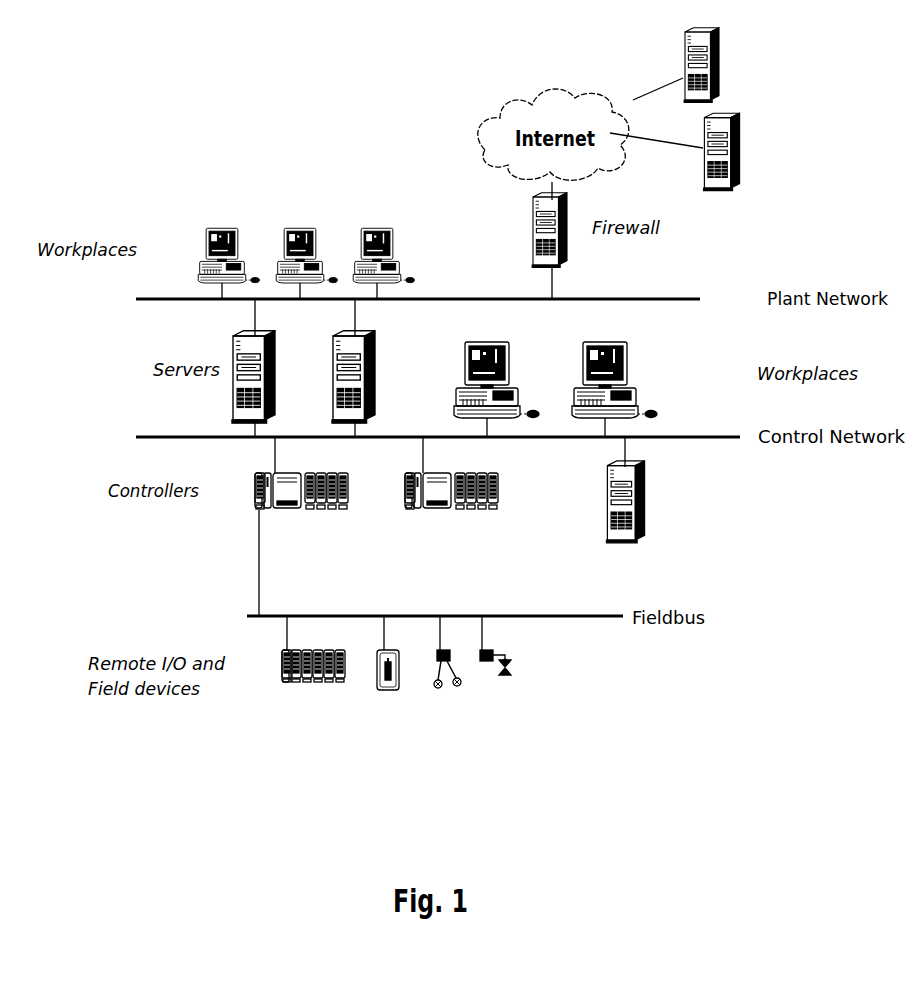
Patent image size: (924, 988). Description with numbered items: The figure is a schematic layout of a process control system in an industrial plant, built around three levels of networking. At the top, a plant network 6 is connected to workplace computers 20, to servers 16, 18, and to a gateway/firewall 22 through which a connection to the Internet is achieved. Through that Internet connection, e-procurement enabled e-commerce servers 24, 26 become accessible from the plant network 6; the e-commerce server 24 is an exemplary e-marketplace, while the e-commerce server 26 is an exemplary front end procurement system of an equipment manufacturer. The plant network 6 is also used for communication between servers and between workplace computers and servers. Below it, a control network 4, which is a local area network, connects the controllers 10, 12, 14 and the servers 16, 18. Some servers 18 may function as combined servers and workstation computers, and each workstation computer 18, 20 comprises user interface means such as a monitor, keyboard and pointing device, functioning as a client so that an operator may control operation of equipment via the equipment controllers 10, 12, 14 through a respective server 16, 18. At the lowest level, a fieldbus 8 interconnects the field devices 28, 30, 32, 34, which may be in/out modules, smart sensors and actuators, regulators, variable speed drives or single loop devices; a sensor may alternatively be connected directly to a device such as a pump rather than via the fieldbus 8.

The control network 4 is at (715, 441).
The plant network 6 is at (687, 293).
The fieldbus 8 is at (572, 620).
The controller 10 is at (255, 507).
The controller 12 is at (427, 510).
The controller 14 is at (608, 515).
The server 16 is at (273, 343).
The server 18 is at (517, 360).
The workplace computer 20 is at (223, 228).
The gateway/firewall 22 is at (531, 222).
The e-commerce server 24 is at (748, 150).
The e-commerce server 26 is at (723, 63).
The field device 28 is at (310, 683).
The field device 30 is at (386, 690).
The field device 32 is at (440, 693).
The field device 34 is at (505, 683).